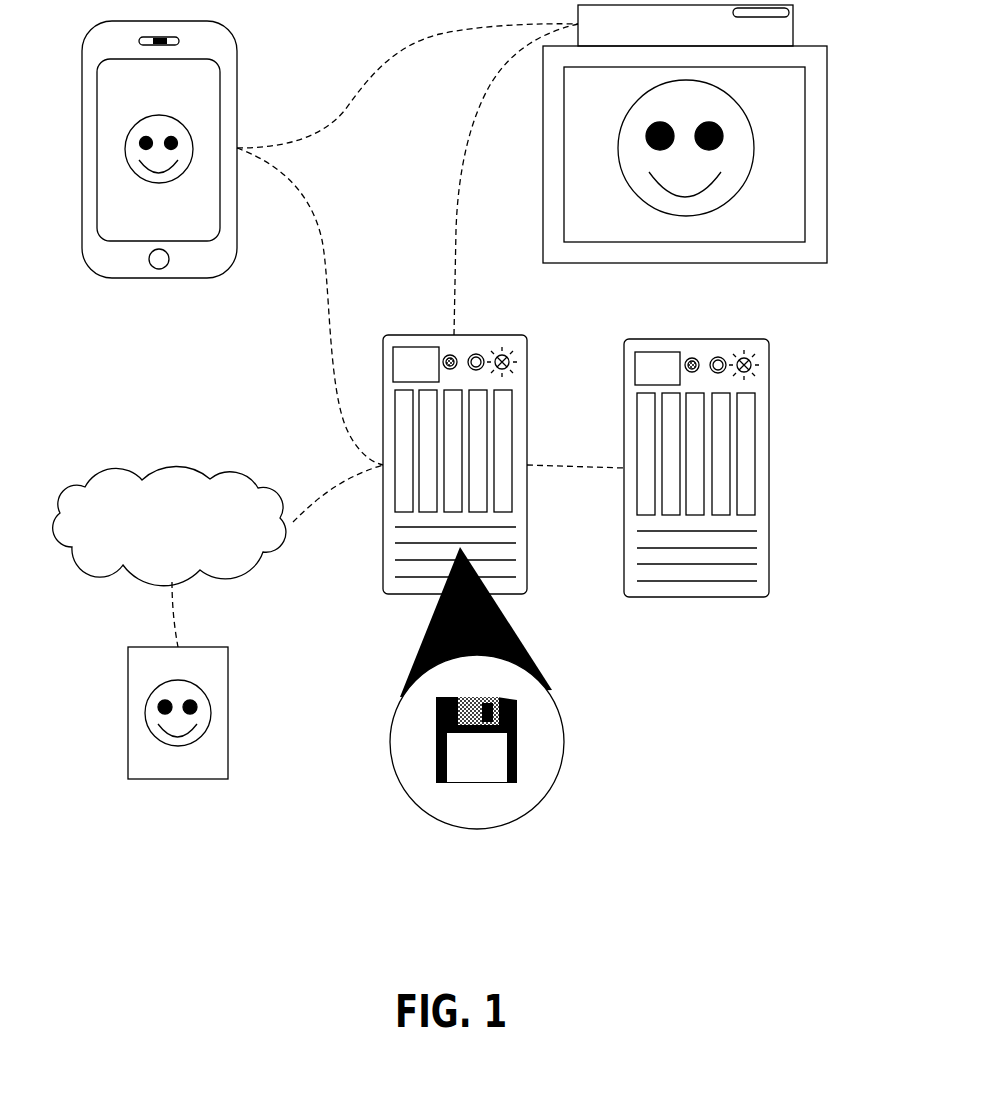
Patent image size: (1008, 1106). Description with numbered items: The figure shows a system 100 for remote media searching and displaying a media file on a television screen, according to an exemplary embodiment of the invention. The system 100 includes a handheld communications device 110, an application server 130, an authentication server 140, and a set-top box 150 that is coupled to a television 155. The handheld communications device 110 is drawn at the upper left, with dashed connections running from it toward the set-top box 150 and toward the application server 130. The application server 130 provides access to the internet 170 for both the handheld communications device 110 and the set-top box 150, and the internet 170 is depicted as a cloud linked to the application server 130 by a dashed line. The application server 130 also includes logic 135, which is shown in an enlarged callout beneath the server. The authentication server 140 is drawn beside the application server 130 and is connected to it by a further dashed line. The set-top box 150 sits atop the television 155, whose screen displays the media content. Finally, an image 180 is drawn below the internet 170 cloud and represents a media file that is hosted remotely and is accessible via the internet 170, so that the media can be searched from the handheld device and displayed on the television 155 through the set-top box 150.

The system 100 is at (693, 748).
The handheld communications device 110 is at (159, 279).
The application server 130 is at (427, 335).
The logic 135 is at (470, 783).
The authentication server 140 is at (660, 339).
The set-top box 150 is at (685, 25).
The television 155 is at (758, 262).
The internet 170 is at (172, 465).
The image 180 is at (178, 779).